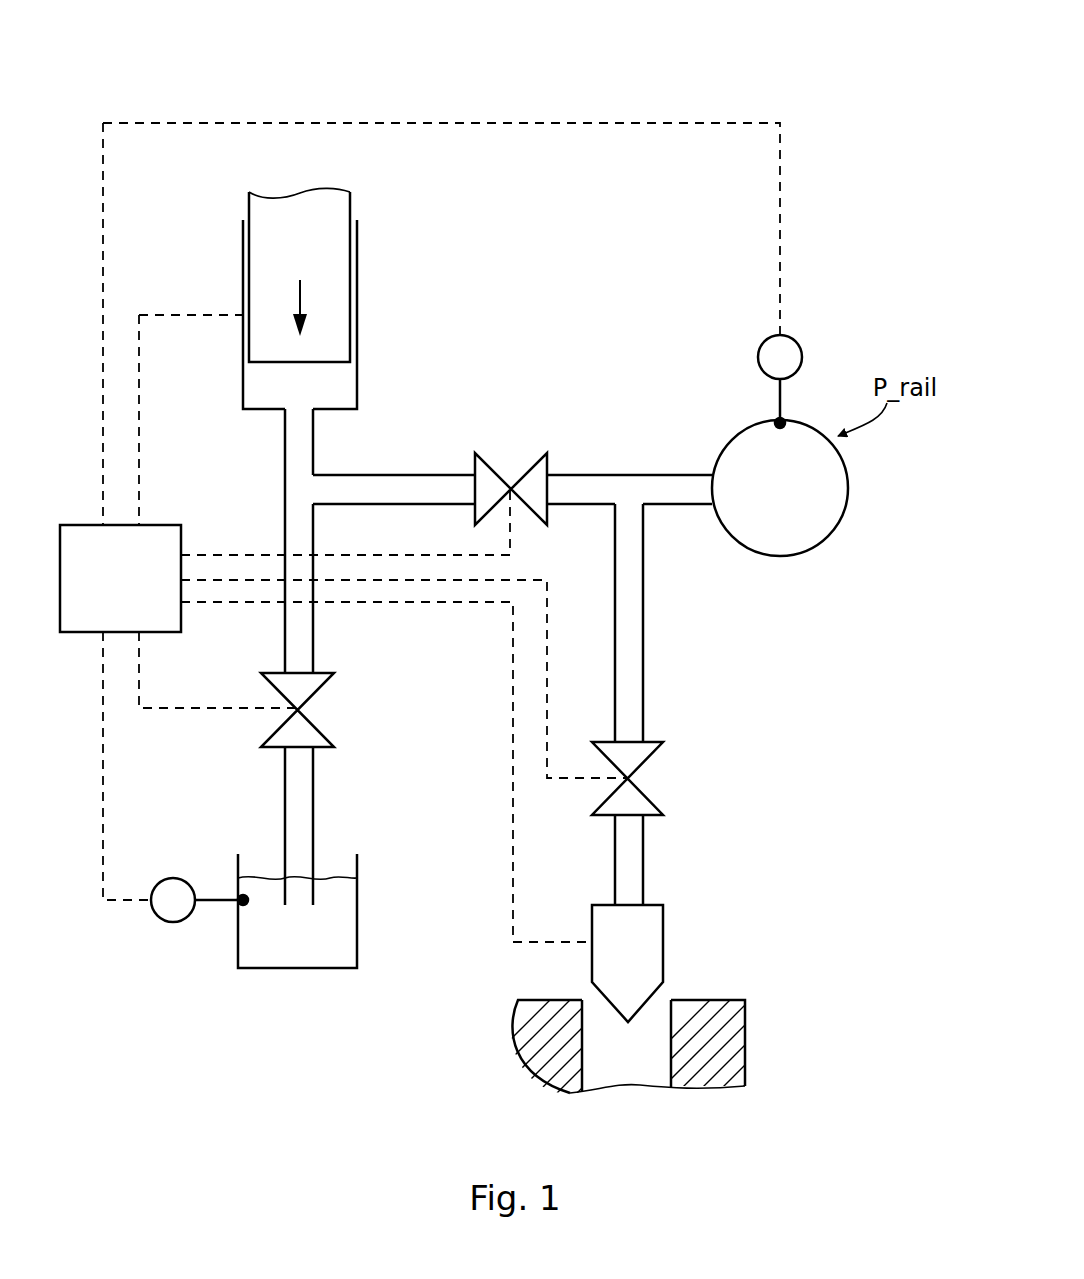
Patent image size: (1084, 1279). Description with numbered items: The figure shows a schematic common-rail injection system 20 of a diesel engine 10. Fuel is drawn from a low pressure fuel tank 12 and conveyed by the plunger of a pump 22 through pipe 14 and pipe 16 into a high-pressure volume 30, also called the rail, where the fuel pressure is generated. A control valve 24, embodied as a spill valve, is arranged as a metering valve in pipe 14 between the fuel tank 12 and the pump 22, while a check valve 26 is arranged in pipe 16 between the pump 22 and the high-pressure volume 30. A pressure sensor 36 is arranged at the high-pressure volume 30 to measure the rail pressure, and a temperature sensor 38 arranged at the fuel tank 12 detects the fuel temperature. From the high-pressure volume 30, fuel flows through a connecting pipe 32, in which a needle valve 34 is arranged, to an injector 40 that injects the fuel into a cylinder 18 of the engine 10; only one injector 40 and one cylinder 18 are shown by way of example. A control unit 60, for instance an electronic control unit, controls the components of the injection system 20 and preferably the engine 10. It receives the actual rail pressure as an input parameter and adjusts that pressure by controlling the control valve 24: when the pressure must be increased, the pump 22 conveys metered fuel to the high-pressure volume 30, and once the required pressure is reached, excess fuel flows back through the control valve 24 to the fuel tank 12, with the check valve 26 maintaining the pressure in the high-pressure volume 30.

The diesel engine 10 is at (735, 1035).
The fuel tank 12 is at (297, 972).
The pipe 14 is at (285, 497).
The pipe 16 is at (410, 475).
The cylinder 18 is at (613, 1064).
The common-rail injection system 20 is at (827, 178).
The pump 22 is at (285, 256).
The control valve 24 is at (334, 725).
The check valve 26 is at (511, 470).
The high-pressure volume 30 is at (765, 503).
The connecting pipe 32 is at (643, 580).
The needle valve 34 is at (655, 800).
The pressure sensor 36 is at (758, 352).
The temperature sensor 38 is at (172, 923).
The injector 40 is at (613, 966).
The control unit 60 is at (103, 593).